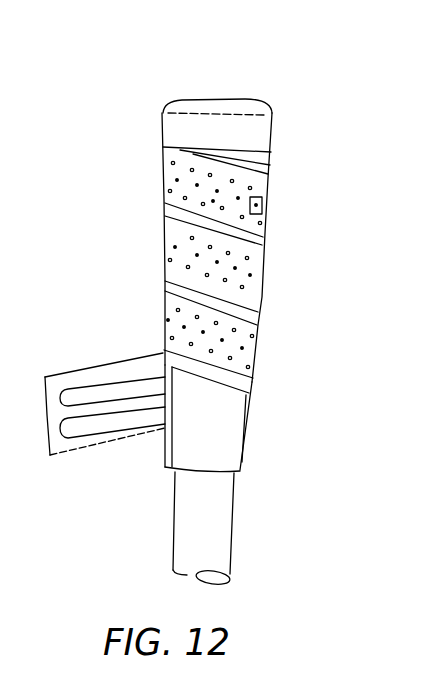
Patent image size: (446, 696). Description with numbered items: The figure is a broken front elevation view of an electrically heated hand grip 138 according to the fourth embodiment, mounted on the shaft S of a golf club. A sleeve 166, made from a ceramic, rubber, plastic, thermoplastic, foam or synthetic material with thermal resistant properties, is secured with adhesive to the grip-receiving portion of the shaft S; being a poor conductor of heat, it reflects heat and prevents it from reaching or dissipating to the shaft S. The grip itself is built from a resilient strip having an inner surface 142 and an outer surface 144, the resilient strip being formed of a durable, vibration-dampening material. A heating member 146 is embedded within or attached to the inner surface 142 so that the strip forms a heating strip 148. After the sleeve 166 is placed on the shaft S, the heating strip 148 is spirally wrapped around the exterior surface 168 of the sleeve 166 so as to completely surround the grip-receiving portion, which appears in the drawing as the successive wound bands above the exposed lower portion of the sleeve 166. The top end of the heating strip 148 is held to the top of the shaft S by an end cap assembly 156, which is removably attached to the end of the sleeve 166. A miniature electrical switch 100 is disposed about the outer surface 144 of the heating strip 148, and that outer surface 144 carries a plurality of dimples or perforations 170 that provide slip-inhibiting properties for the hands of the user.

The electrically heated hand grip 138 is at (141, 97).
The end cap assembly 156 is at (273, 135).
The electrical switch 100 is at (265, 198).
The dimples or perforations 170 is at (163, 228).
The outer surface 144 is at (250, 347).
The heating strip 148 is at (120, 352).
The inner surface 142 is at (62, 447).
The heating member 146 is at (158, 456).
The exterior surface 168 is at (227, 426).
The sleeve 166 is at (244, 443).
The shaft S is at (235, 510).